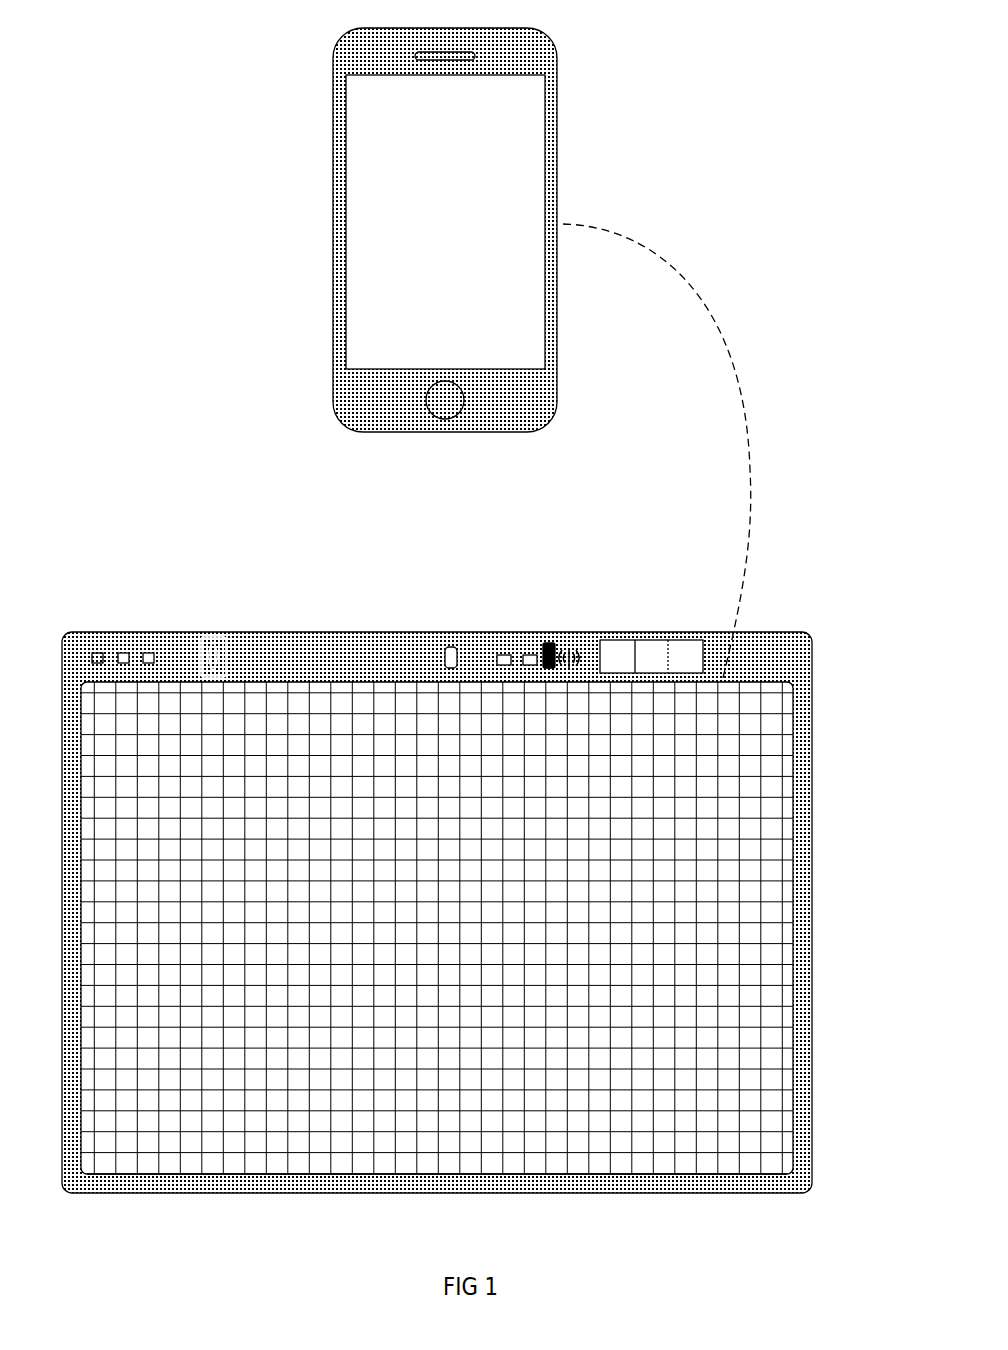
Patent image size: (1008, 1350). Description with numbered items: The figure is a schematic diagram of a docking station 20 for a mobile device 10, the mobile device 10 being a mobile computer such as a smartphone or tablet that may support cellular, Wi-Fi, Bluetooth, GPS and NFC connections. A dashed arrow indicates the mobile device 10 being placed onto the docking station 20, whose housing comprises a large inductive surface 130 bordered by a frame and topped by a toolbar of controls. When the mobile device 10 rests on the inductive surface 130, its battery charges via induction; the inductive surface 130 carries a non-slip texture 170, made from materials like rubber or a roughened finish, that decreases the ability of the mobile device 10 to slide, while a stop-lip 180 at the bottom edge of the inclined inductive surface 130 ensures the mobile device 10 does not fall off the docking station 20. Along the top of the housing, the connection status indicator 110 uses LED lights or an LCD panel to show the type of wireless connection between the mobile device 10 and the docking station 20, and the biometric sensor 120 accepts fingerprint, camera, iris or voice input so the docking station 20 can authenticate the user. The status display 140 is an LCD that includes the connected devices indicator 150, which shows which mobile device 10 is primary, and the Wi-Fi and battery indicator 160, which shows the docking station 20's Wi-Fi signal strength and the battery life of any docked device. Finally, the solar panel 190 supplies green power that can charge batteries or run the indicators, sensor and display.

The mobile device 10 is at (445, 216).
The docking station 20 is at (805, 855).
The connection status indicator 110 is at (123, 640).
The biometric sensor 120 is at (213, 640).
The inductive surface 130 is at (191, 733).
The status display 140 is at (340, 646).
The connected devices indicator 150 is at (453, 645).
The Wi-Fi and battery indicator 160 is at (558, 637).
The non-slip texture 170 is at (747, 1024).
The stop-lip 180 is at (657, 1180).
The solar panel 190 is at (640, 638).